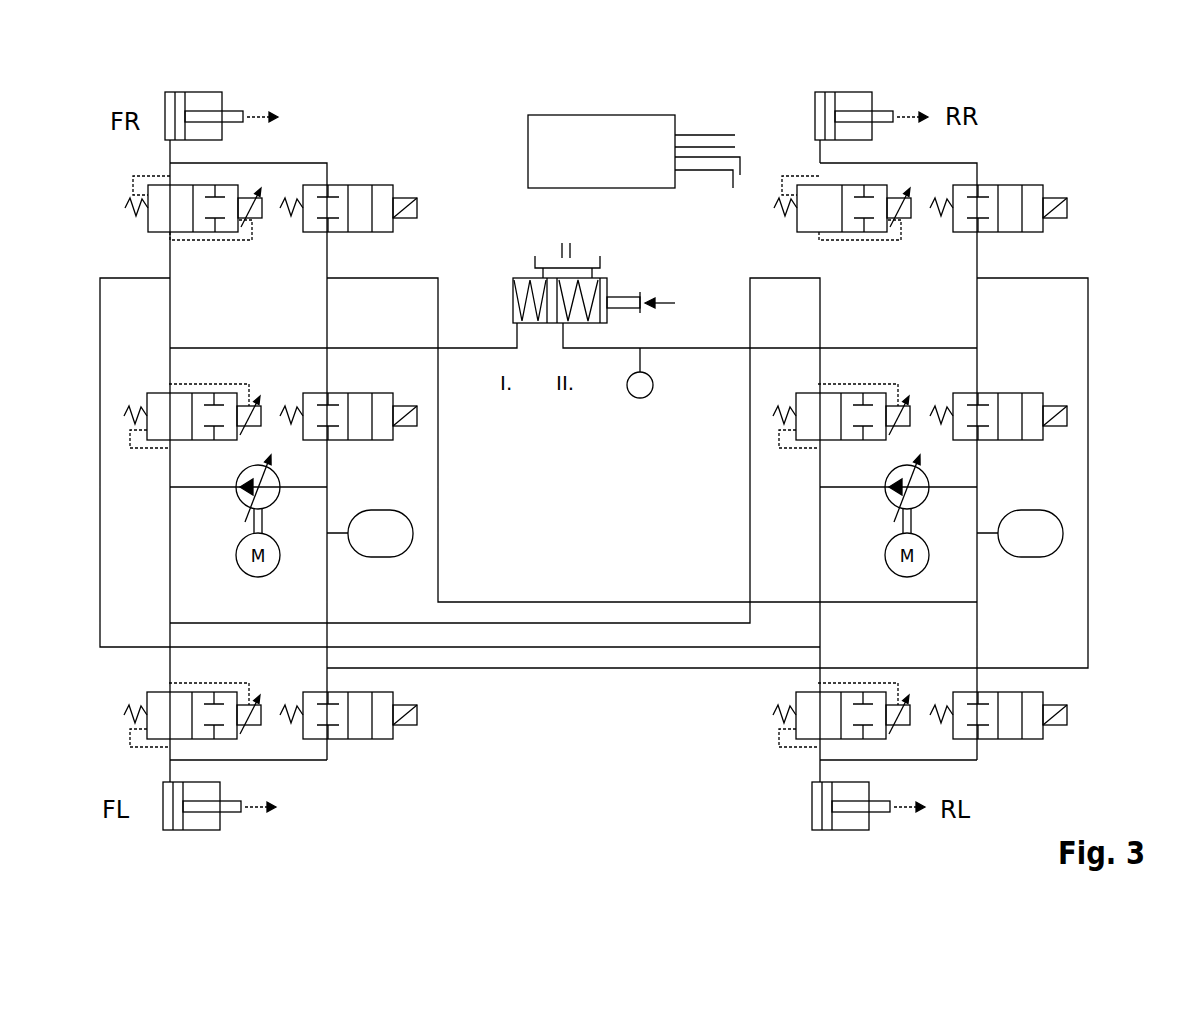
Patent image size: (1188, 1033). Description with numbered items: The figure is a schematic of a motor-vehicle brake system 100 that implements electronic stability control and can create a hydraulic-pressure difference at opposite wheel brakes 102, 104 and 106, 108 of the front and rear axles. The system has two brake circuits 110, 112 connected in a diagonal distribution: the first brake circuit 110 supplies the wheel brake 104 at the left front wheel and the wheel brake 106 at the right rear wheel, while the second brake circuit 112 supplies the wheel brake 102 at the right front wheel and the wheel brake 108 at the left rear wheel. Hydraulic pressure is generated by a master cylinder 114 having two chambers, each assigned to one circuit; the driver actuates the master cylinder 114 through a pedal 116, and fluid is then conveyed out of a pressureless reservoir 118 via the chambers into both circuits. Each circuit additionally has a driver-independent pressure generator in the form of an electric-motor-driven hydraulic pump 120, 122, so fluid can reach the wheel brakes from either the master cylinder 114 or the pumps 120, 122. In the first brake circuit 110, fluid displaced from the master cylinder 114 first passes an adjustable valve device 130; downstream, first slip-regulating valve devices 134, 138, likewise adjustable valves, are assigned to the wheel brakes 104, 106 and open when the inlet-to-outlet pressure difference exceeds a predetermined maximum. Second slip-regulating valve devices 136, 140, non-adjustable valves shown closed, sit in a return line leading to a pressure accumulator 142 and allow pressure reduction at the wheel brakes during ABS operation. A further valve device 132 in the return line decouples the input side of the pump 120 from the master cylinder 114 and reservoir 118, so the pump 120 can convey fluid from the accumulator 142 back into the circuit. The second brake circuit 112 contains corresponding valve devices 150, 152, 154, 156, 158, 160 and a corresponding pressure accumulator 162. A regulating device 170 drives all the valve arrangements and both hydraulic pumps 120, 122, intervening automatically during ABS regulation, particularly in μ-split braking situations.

The motor-vehicle brake system 100 is at (506, 791).
The wheel brake 102 is at (203, 92).
The wheel brake 104 is at (190, 830).
The wheel brake 106 is at (848, 92).
The wheel brake 108 is at (842, 830).
The first brake circuit 110 is at (463, 350).
The second brake circuit 112 is at (603, 350).
The master cylinder 114 is at (512, 290).
The pedal 116 is at (636, 298).
The pressureless reservoir 118 is at (553, 250).
The hydraulic pump 120 is at (240, 495).
The hydraulic pump 122 is at (890, 494).
The first valve device 130 is at (158, 393).
The further valve device 132 is at (350, 445).
The first slip-regulating valve device 134 is at (150, 692).
The second slip-regulating valve device 136 is at (358, 738).
The first slip-regulating valve device 138 is at (862, 232).
The second slip-regulating valve device 140 is at (1020, 185).
The pressure accumulator 142 is at (370, 560).
The valve device 150 is at (810, 440).
The valve device 152 is at (1010, 440).
The valve device 154 is at (796, 694).
The valve device 156 is at (1033, 740).
The valve device 158 is at (230, 232).
The valve device 160 is at (376, 232).
The pressure accumulator 162 is at (1048, 558).
The regulating device 170 is at (634, 151).